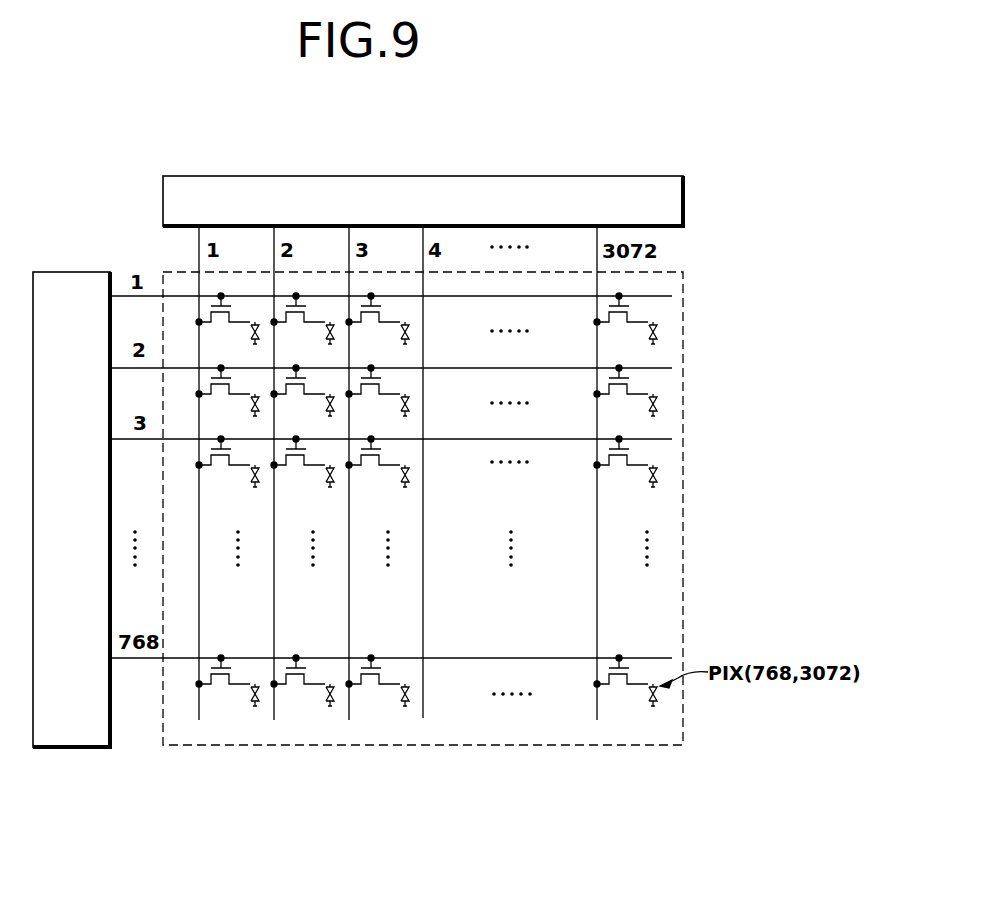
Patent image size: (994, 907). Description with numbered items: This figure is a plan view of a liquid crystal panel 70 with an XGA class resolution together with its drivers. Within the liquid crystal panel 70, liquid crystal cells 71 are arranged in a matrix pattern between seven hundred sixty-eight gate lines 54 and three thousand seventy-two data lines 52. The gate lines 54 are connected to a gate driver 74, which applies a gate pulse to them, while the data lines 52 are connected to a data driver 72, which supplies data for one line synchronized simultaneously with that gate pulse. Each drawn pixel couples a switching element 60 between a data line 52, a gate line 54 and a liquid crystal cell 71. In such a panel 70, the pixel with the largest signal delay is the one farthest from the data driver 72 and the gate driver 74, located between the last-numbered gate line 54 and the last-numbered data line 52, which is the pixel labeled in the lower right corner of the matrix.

The data driver 72 is at (647, 176).
The gate driver 74 is at (59, 272).
The liquid crystal panel 70 is at (673, 272).
The thin film transistor (switching element) 60 is at (627, 312).
The liquid crystal cell 71 is at (660, 322).
The data line 52 is at (598, 513).
The gate line 54 is at (451, 660).